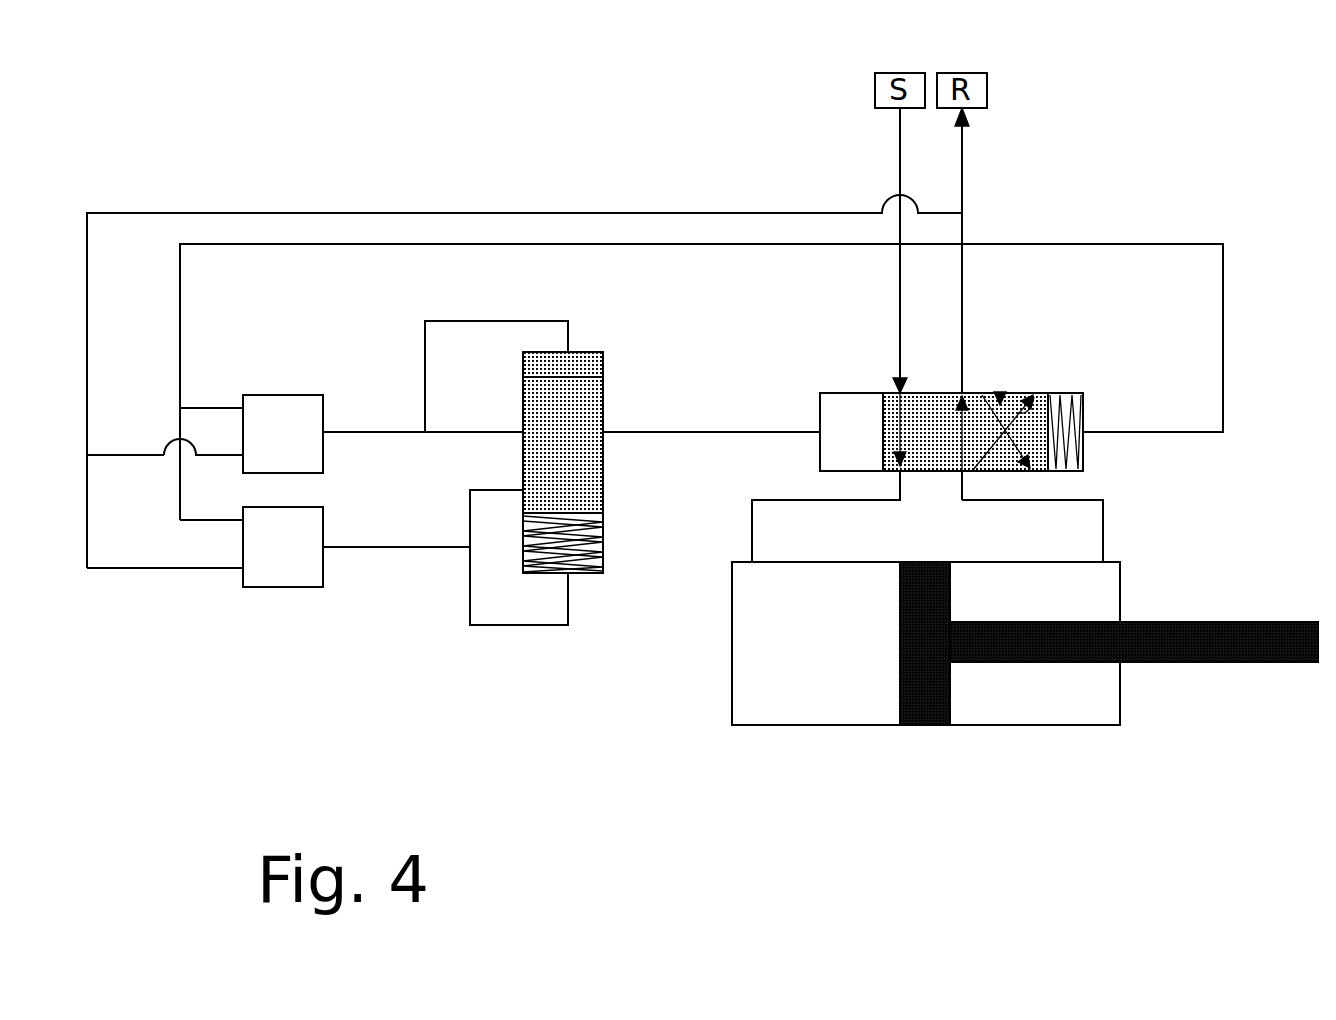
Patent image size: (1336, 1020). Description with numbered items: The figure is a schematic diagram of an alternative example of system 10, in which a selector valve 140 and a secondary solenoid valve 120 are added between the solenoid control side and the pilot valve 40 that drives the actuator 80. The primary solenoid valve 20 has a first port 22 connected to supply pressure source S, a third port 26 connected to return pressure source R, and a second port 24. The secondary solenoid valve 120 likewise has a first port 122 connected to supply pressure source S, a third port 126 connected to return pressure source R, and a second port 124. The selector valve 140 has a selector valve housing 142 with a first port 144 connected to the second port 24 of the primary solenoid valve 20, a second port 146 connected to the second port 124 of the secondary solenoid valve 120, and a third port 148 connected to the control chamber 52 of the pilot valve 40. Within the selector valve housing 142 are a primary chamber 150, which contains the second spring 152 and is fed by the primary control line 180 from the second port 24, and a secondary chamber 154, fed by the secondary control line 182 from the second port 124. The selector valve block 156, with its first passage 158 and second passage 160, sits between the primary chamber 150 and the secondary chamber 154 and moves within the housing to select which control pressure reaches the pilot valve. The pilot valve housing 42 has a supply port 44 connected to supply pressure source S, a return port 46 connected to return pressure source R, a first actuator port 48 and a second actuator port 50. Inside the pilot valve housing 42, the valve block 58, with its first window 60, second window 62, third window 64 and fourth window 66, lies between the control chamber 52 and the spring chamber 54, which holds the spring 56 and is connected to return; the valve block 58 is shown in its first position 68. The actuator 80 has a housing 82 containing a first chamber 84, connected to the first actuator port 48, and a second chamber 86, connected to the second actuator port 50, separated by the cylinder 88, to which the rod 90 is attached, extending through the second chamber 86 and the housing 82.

The system 10 is at (1200, 133).
The primary solenoid valve 20 is at (288, 588).
The first port 22 is at (242, 522).
The second port 24 is at (325, 546).
The third port 26 is at (242, 570).
The pilot valve 40 is at (1001, 395).
The pilot valve housing 42 is at (838, 393).
The supply port 44 is at (908, 397).
The return port 46 is at (960, 394).
The first actuator port 48 is at (903, 460).
The second actuator port 50 is at (955, 474).
The control chamber 52 is at (838, 443).
The spring chamber 54 is at (1068, 397).
The spring 56 is at (1084, 442).
The valve block 58 is at (933, 449).
The first window 60 is at (897, 418).
The second window 62 is at (957, 446).
The third window 64 is at (985, 397).
The fourth window 66 is at (1036, 396).
The first position 68 is at (1007, 397).
The actuator 80 is at (977, 700).
The housing 82 is at (817, 726).
The first chamber 84 is at (829, 659).
The second chamber 86 is at (1053, 604).
The cylinder 88 is at (917, 697).
The rod 90 is at (1237, 640).
The secondary solenoid valve 120 is at (289, 393).
The first port 122 is at (242, 407).
The second port 124 is at (325, 430).
The third port 126 is at (240, 457).
The selector valve 140 is at (604, 352).
The selector valve housing 142 is at (604, 535).
The first port 144 is at (521, 494).
The second port 146 is at (522, 431).
The third port 148 is at (524, 489).
The primary chamber 150 is at (578, 558).
The second spring 152 is at (604, 553).
The secondary chamber 154 is at (580, 350).
The selector valve block 156 is at (538, 447).
The first passage 158 is at (575, 458).
The second passage 160 is at (553, 372).
The primary control line 180 is at (515, 627).
The secondary control line 182 is at (463, 320).